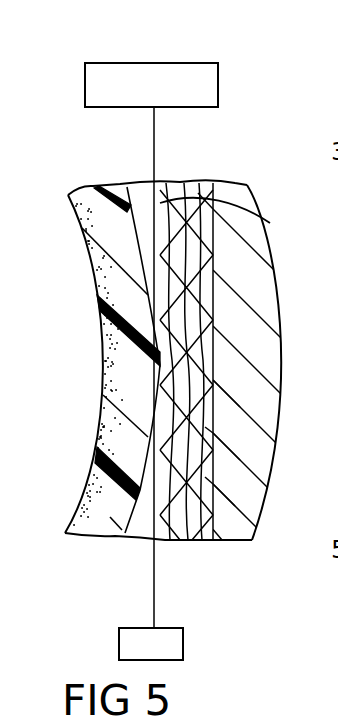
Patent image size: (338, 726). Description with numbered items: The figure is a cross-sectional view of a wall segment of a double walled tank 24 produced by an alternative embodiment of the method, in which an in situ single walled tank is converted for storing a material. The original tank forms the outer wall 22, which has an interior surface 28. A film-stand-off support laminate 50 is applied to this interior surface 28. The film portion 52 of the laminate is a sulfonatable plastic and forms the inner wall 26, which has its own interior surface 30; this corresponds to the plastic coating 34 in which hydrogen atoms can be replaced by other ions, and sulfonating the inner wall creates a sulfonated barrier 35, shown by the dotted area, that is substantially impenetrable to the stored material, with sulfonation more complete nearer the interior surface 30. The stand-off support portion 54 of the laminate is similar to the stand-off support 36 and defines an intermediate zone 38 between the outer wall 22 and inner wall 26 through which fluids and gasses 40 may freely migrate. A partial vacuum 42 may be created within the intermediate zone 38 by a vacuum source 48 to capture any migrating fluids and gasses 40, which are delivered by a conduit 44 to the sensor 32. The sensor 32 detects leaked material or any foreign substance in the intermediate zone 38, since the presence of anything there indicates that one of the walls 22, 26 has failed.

The outer wall 22 is at (257, 301).
The double walled tank 24 is at (272, 175).
The inner wall 26 is at (94, 197).
The interior surface 28 is at (212, 414).
The interior surface 30 is at (97, 298).
The sensor 32 is at (219, 93).
The plastic coating 34 is at (90, 514).
The sulfonated barrier 35 is at (108, 372).
The stand-off support 36 is at (270, 223).
The intermediate zone 38 is at (176, 523).
The fluids and gasses 40 is at (199, 347).
The partial vacuum 42 is at (142, 182).
The conduit 44 is at (155, 160).
The vacuum source 48 is at (182, 630).
The film-stand-off support laminate 50 is at (175, 543).
The film portion 52 is at (122, 350).
The stand-off support portion 54 is at (203, 452).